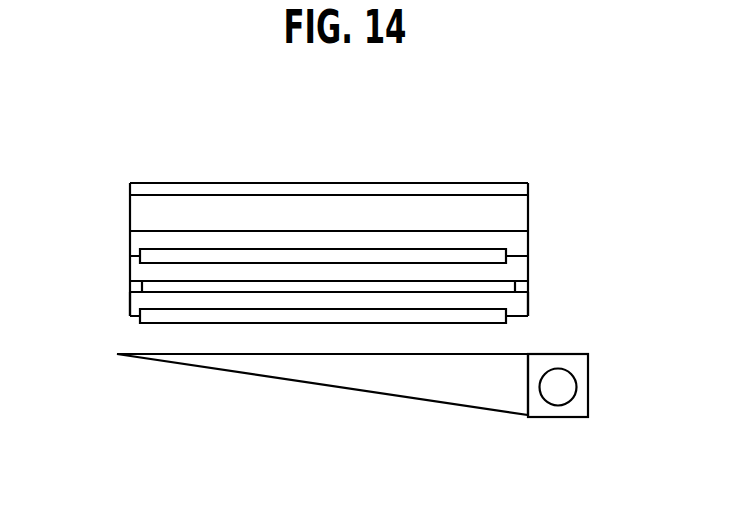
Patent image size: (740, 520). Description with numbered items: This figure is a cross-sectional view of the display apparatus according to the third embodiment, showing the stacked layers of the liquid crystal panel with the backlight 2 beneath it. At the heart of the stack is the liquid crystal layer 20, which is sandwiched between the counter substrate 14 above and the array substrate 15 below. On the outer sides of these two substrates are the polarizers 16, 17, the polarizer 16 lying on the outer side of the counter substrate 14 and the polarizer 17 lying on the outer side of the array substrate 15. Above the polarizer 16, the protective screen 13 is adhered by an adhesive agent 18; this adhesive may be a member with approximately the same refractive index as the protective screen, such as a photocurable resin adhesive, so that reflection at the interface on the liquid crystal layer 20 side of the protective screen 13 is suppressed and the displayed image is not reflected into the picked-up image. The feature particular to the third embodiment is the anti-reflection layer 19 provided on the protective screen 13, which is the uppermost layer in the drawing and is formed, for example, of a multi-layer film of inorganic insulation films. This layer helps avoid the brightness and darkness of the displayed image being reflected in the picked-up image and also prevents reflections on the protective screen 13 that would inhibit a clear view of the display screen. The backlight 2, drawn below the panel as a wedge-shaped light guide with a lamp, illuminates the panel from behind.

The backlight 2 is at (565, 417).
The protective screen 13 is at (524, 212).
The counter substrate 14 is at (524, 272).
The array substrate 15 is at (524, 314).
The polarizer 16 is at (133, 263).
The polarizer 17 is at (133, 324).
The adhesive agent 18 is at (524, 250).
The anti-reflection layer 19 is at (524, 182).
The liquid crystal layer 20 is at (505, 289).